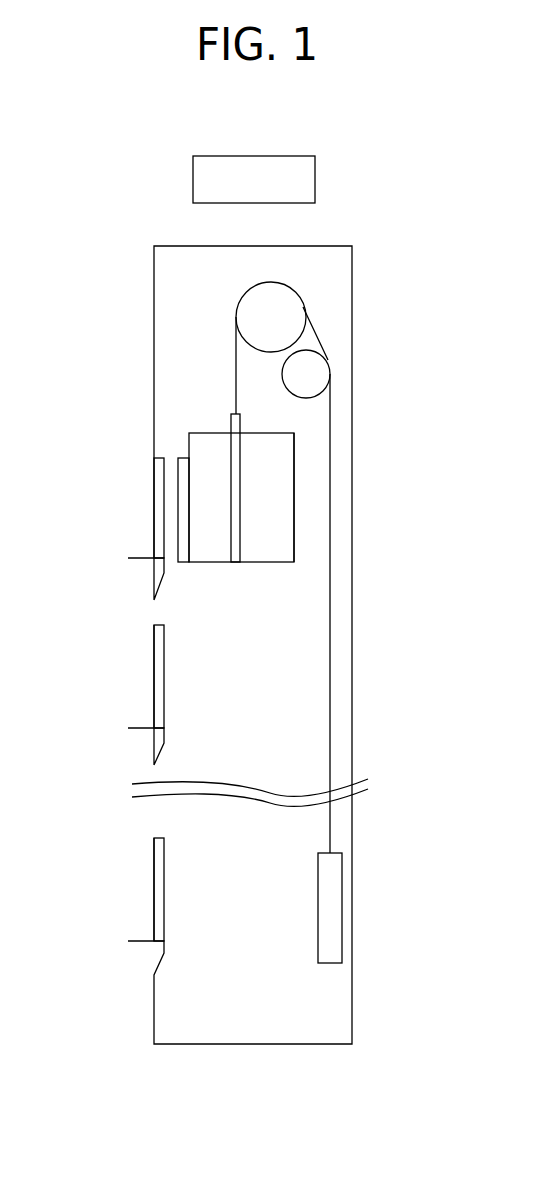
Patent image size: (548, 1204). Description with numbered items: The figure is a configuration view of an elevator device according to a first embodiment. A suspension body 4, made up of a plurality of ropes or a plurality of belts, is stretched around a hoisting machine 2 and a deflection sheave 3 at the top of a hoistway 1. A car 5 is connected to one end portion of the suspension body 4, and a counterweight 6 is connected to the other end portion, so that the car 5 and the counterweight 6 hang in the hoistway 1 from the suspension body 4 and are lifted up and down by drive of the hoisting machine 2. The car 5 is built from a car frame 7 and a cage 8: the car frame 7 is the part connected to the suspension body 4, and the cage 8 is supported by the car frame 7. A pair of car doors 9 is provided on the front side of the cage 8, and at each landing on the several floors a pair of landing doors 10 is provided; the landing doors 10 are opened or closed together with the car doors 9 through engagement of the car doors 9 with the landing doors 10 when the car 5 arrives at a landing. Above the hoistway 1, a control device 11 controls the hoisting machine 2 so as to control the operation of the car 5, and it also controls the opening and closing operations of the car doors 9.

The hoistway 1 is at (172, 592).
The hoisting machine 2 is at (250, 313).
The deflection sheave 3 is at (315, 370).
The suspension body 4 is at (330, 545).
The car 5 is at (294, 441).
The counterweight 6 is at (342, 901).
The car frame 7 is at (241, 476).
The cage 8 is at (294, 505).
The car doors 9 is at (160, 465).
The landing doors 10 is at (160, 505).
The control device 11 is at (315, 178).